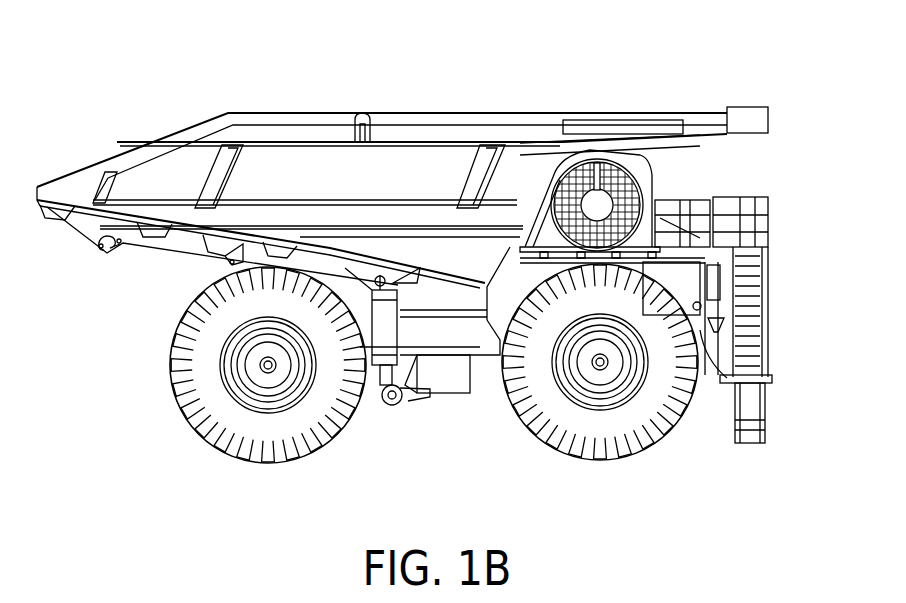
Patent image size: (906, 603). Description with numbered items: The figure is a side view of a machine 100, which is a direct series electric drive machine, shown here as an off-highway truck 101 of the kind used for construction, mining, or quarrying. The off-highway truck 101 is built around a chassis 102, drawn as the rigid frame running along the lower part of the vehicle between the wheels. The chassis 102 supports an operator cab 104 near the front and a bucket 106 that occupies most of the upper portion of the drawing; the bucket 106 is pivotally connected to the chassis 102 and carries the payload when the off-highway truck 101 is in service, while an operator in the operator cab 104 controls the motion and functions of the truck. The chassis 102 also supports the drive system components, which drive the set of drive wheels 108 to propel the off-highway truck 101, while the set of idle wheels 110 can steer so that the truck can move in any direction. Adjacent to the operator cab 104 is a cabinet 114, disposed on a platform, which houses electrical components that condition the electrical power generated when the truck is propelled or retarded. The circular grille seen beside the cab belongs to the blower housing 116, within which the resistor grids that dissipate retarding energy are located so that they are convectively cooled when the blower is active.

The machine 100 is at (404, 267).
The off-highway truck 101 is at (402, 194).
The chassis 102 is at (495, 343).
The operator cab 104 is at (653, 177).
The bucket 106 is at (287, 132).
The drive wheels 108 is at (305, 415).
The idle wheels 110 is at (587, 417).
The cabinet 114 is at (547, 225).
The blower housing 116 is at (617, 162).